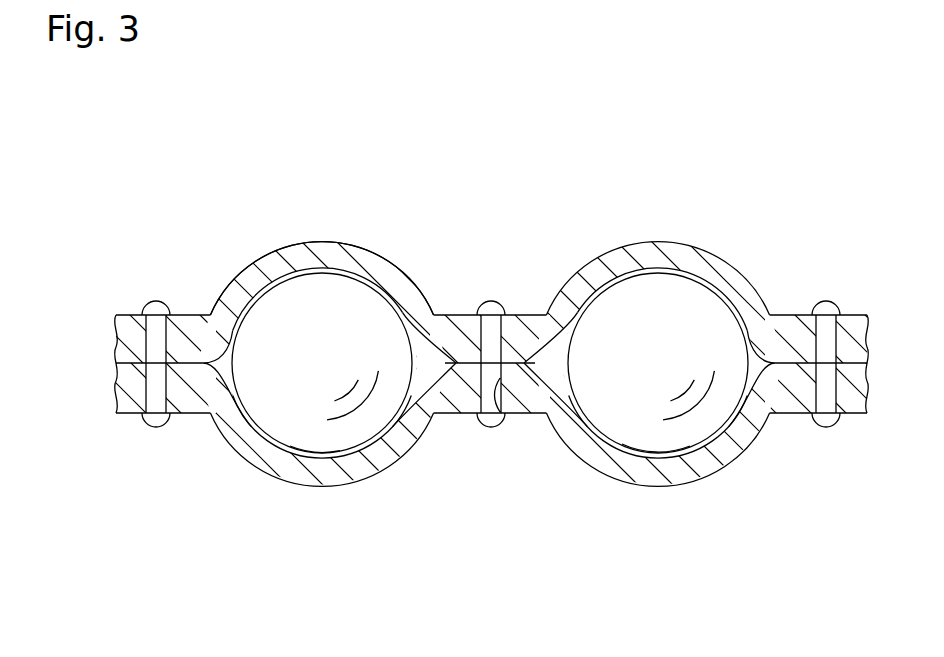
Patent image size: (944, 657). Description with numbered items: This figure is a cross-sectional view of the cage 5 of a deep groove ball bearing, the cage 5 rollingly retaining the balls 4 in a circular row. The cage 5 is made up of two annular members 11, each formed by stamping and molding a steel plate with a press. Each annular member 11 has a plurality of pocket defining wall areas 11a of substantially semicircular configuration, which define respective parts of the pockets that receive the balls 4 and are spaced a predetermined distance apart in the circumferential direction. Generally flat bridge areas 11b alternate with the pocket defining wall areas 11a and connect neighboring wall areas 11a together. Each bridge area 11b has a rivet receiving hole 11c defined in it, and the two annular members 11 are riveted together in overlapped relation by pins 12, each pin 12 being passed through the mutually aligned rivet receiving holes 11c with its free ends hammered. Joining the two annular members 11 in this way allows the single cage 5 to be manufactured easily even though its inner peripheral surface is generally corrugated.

The ball 4 is at (270, 318).
The cage 5 is at (211, 298).
The annular member 11 is at (313, 241).
The pocket defining wall area 11a is at (363, 262).
The bridge area 11b is at (513, 333).
The rivet receiving hole 11c is at (503, 414).
The pin 12 is at (156, 426).